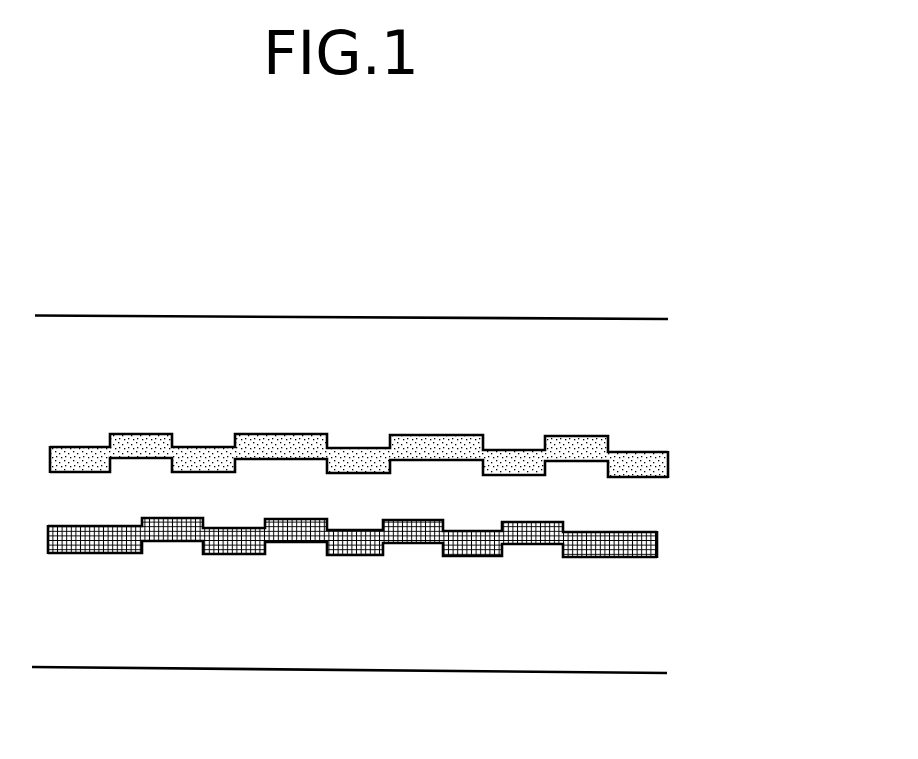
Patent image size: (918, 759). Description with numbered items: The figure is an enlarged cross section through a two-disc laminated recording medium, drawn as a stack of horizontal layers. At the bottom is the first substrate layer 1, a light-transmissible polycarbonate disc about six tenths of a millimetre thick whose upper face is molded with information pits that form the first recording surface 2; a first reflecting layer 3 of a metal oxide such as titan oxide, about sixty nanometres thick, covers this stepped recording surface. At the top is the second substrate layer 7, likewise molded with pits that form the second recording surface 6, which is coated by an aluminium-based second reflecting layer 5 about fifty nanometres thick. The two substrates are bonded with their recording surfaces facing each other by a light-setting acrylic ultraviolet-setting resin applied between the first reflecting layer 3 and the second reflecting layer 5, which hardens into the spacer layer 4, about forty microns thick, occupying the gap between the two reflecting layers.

The first substrate layer 1 is at (595, 609).
The first recording surface 2 is at (630, 561).
The first reflecting layer 3 is at (628, 540).
The spacer layer 4 is at (623, 511).
The second reflecting layer 5 is at (627, 465).
The second recording surface 6 is at (633, 452).
The second substrate layer 7 is at (597, 382).